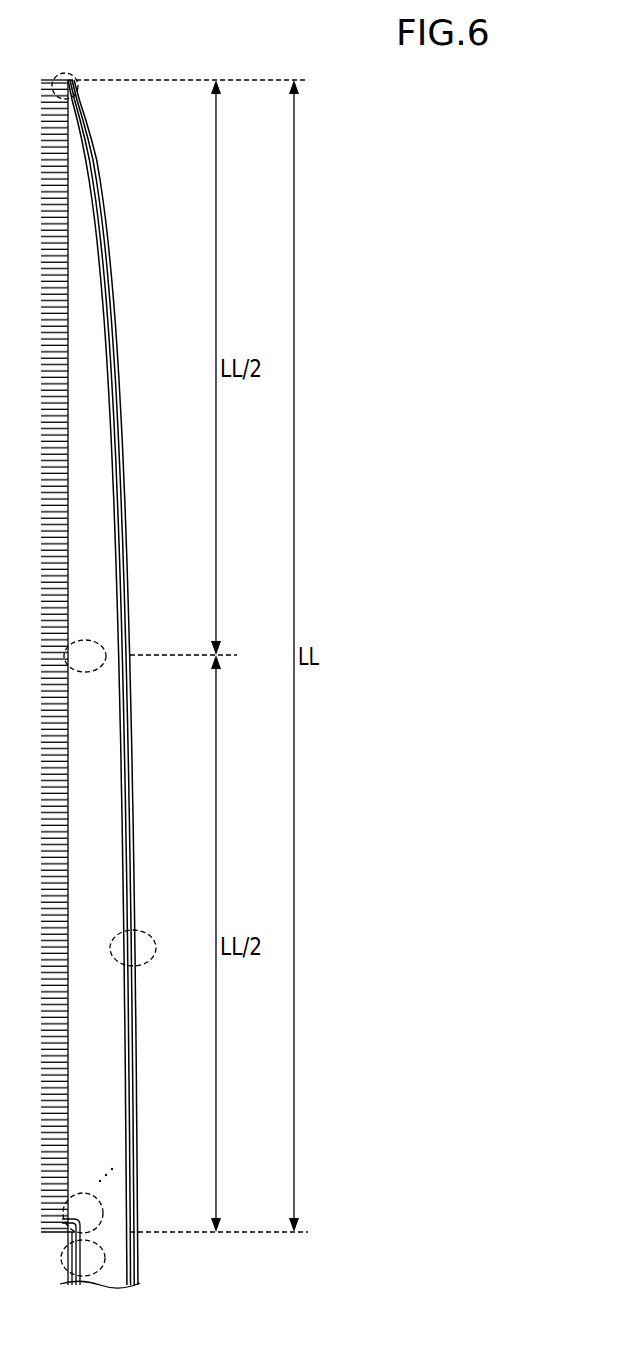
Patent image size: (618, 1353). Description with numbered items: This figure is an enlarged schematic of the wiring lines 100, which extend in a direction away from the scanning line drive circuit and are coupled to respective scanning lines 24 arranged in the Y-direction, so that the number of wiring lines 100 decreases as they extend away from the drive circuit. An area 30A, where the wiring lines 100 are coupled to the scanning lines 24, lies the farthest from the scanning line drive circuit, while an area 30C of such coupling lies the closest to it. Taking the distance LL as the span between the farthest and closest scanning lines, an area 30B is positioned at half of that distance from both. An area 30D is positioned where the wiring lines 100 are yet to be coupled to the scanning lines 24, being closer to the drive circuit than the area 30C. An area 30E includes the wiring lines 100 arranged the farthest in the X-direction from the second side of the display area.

The scanning lines 24 is at (52, 80).
The wiring lines 100 is at (121, 443).
The area 30A is at (68, 73).
The area 30B is at (104, 648).
The area 30C is at (103, 1213).
The area 30D is at (105, 1258).
The area 30E is at (146, 931).